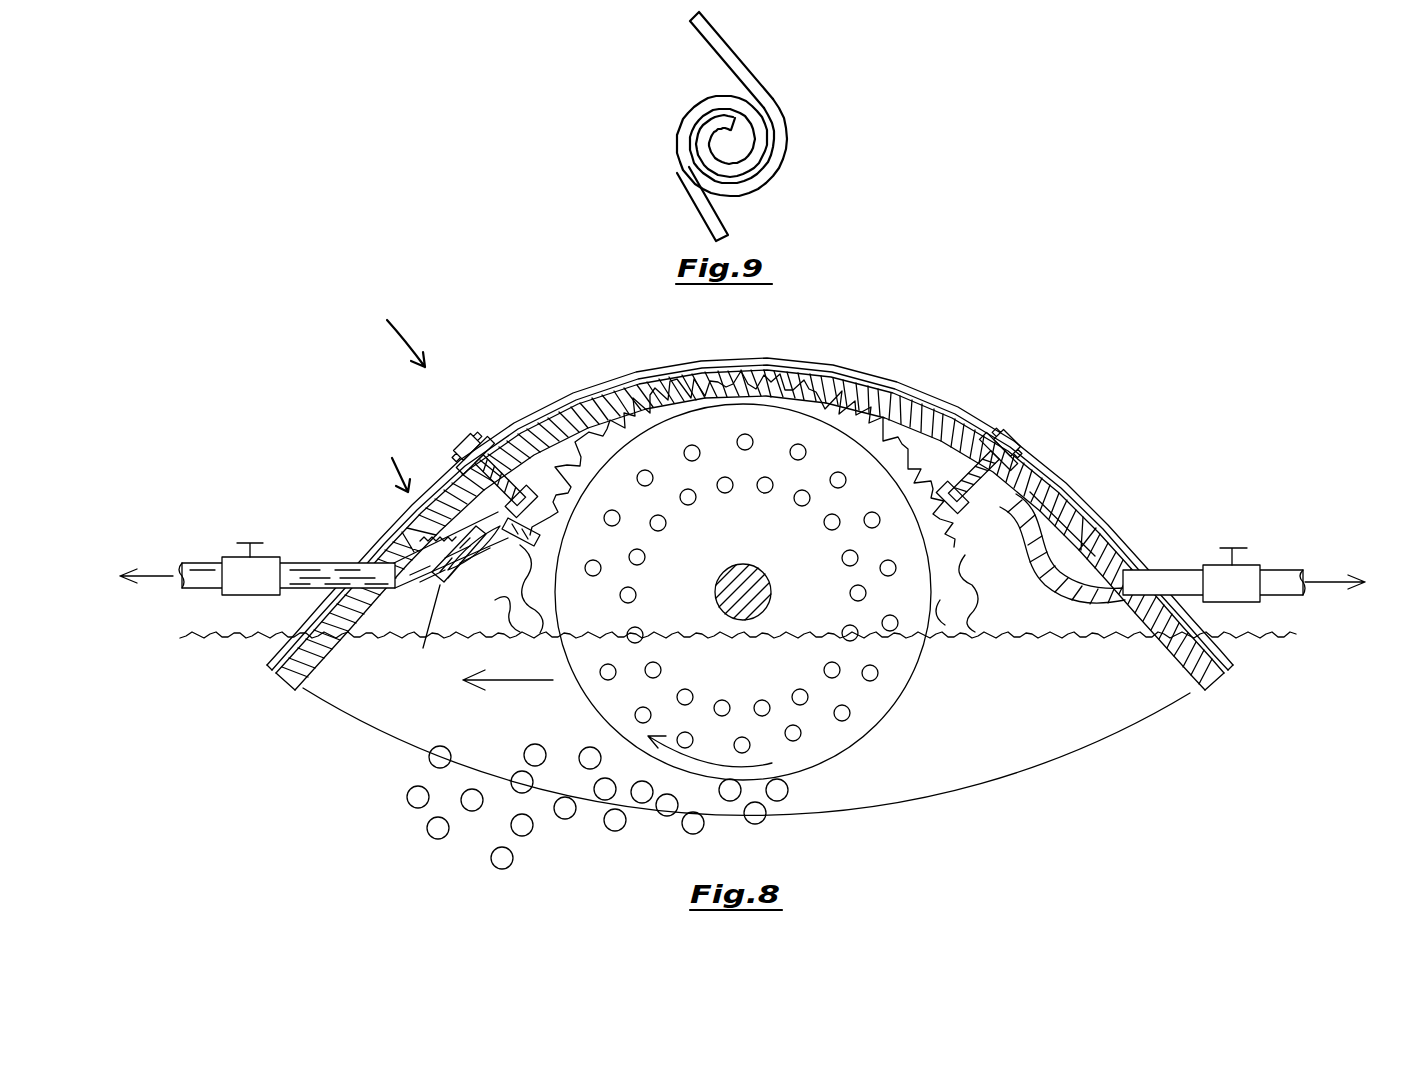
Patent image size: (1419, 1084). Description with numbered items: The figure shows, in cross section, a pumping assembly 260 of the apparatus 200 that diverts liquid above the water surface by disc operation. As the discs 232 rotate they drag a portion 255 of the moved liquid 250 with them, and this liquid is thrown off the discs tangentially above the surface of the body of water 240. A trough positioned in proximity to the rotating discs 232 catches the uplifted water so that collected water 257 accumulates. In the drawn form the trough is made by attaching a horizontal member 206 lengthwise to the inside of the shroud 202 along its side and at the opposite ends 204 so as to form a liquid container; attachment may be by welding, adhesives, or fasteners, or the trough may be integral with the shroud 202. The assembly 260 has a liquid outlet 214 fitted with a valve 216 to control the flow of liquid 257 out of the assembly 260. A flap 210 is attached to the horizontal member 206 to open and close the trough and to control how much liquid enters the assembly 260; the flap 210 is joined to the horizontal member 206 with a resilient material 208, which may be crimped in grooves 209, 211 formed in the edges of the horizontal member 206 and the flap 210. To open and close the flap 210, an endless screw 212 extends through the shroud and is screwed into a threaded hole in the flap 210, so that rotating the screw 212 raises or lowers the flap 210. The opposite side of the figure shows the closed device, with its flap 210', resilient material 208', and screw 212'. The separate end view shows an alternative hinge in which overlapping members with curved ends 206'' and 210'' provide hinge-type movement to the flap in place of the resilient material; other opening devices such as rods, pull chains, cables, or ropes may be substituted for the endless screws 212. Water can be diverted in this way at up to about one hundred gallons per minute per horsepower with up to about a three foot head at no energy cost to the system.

In FIG. 8, the drying apparatus 200 is at (396, 330).
In FIG. 8, the shroud 202 is at (848, 373).
In FIG. 8, the opposite ends 204 is at (975, 726).
In FIG. 8, the horizontal member 206 is at (750, 514).
In FIG. 8, the resilient material 208 is at (459, 565).
In FIG. 8, the groove 209 is at (421, 629).
In FIG. 8, the flap 210 is at (500, 520).
In FIG. 8, the groove 211 is at (492, 540).
In FIG. 8, the endless screw 212 is at (479, 468).
In FIG. 8, the liquid outlet 214 is at (305, 570).
In FIG. 8, the valve 216 is at (233, 563).
In FIG. 8, the discs 232 is at (765, 541).
In FIG. 8, the body of water 240 is at (1175, 770).
In FIG. 8, the moved liquid 250 is at (508, 667).
In FIG. 8, the portion of the moved liquid 255 is at (492, 608).
In FIG. 8, the collected water 257 is at (387, 560).
In FIG. 8, the pumping assembly 260 is at (382, 460).
In FIG. 8, the screw 212' is at (1004, 458).
In FIG. 8, the flap 210' is at (1062, 535).
In FIG. 8, the resilient material 208' is at (1089, 524).
In FIG. 9, the curved end of flap 210'' is at (750, 104).
In FIG. 9, the curved end of horizontal member 206'' is at (736, 204).